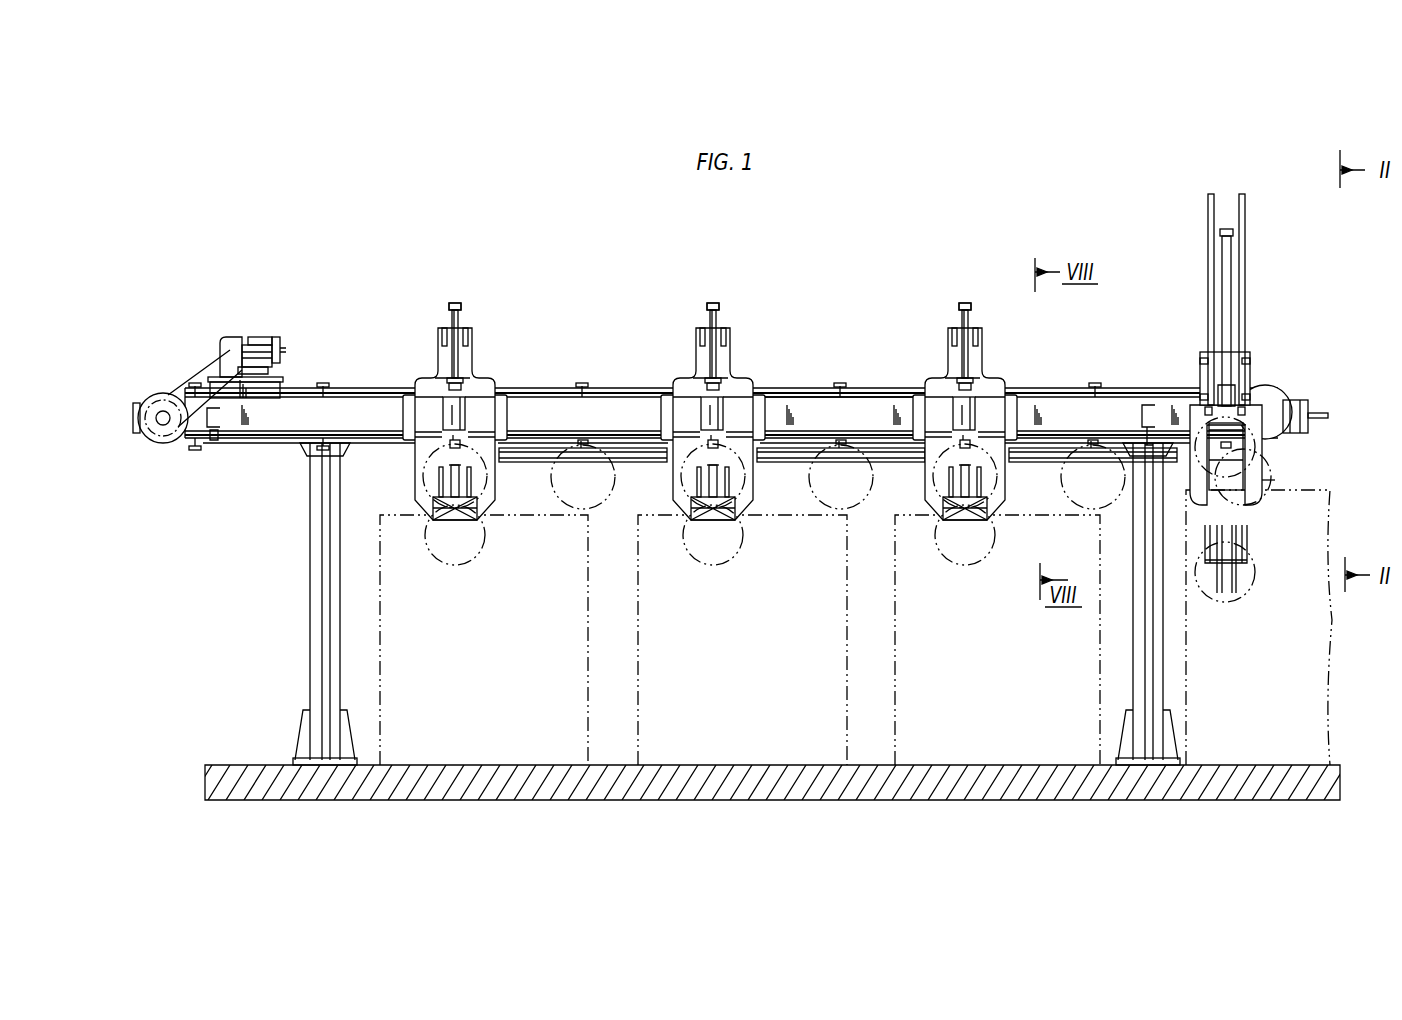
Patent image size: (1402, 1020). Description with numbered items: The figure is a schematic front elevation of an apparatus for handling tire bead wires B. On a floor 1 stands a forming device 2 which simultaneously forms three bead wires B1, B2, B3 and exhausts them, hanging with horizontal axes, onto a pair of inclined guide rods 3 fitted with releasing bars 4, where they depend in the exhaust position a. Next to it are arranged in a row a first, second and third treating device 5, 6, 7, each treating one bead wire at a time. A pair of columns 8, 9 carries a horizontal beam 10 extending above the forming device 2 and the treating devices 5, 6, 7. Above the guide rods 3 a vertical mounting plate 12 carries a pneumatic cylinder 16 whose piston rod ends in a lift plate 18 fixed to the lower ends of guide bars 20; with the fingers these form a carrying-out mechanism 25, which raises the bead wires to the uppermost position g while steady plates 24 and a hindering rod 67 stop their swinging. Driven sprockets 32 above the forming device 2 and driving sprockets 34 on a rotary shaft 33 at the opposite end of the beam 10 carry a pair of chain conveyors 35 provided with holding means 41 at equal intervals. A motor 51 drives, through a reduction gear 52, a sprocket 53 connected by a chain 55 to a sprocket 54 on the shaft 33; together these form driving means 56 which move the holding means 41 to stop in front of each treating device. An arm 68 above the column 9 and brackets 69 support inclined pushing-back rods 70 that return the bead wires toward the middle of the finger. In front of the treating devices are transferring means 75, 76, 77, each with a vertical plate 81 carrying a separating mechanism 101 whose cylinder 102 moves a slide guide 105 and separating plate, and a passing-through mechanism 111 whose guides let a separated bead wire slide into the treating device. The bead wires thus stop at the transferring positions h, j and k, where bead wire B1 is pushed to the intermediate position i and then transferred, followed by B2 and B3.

The floor 1 is at (866, 765).
The forming device 2 is at (1330, 490).
The guide rods 3 is at (1206, 540).
The releasing bars 4 is at (1242, 576).
The first treating device 5 is at (1004, 670).
The second treating device 6 is at (749, 670).
The third treating device 7 is at (486, 670).
The column 8 is at (310, 655).
The column 9 is at (1140, 655).
The horizontal beam 10 is at (766, 393).
The mounting plate 12 is at (1224, 365).
The pneumatic cylinder 16 is at (1210, 262).
The lift plate 18 is at (1196, 410).
The guide bars 20 is at (1246, 257).
The steady plates 24 is at (1275, 480).
The carrying-out mechanism 25 is at (1257, 366).
The driven sprockets 32 is at (1273, 395).
The rotary shaft 33 is at (168, 443).
The driving sprockets 34 is at (147, 440).
The chain conveyors 35 is at (368, 388).
The holding means 41 is at (323, 388).
The motor 51 is at (284, 352).
The reduction gear 52 is at (262, 337).
The sprocket 53 is at (228, 345).
The sprocket 54 is at (150, 405).
The chain 55 is at (190, 380).
The driving means 56 is at (205, 333).
The hindering rod 67 is at (1240, 497).
The arm 68 is at (1141, 419).
The brackets 69 is at (790, 421).
The pushing-back rods 70 is at (545, 460).
The transferring means 75 is at (991, 364).
The transferring means 76 is at (741, 364).
The transferring means 77 is at (481, 361).
The vertical plate 81 is at (486, 382).
The separating mechanism 101 is at (468, 318).
The cylinder 102 is at (450, 318).
The slide guide 105 is at (451, 418).
The passing-through mechanism 111 is at (479, 479).
The bead wire B is at (607, 490).
The bead wire B1 is at (985, 536).
The bead wire B2 is at (744, 533).
The bead wire B3 is at (484, 533).
The exhaust position a is at (1209, 592).
The uppermost position g is at (1263, 440).
The transferring position h is at (938, 480).
The intermediate position i is at (992, 520).
The transferring position j is at (684, 485).
The transferring position k is at (425, 487).